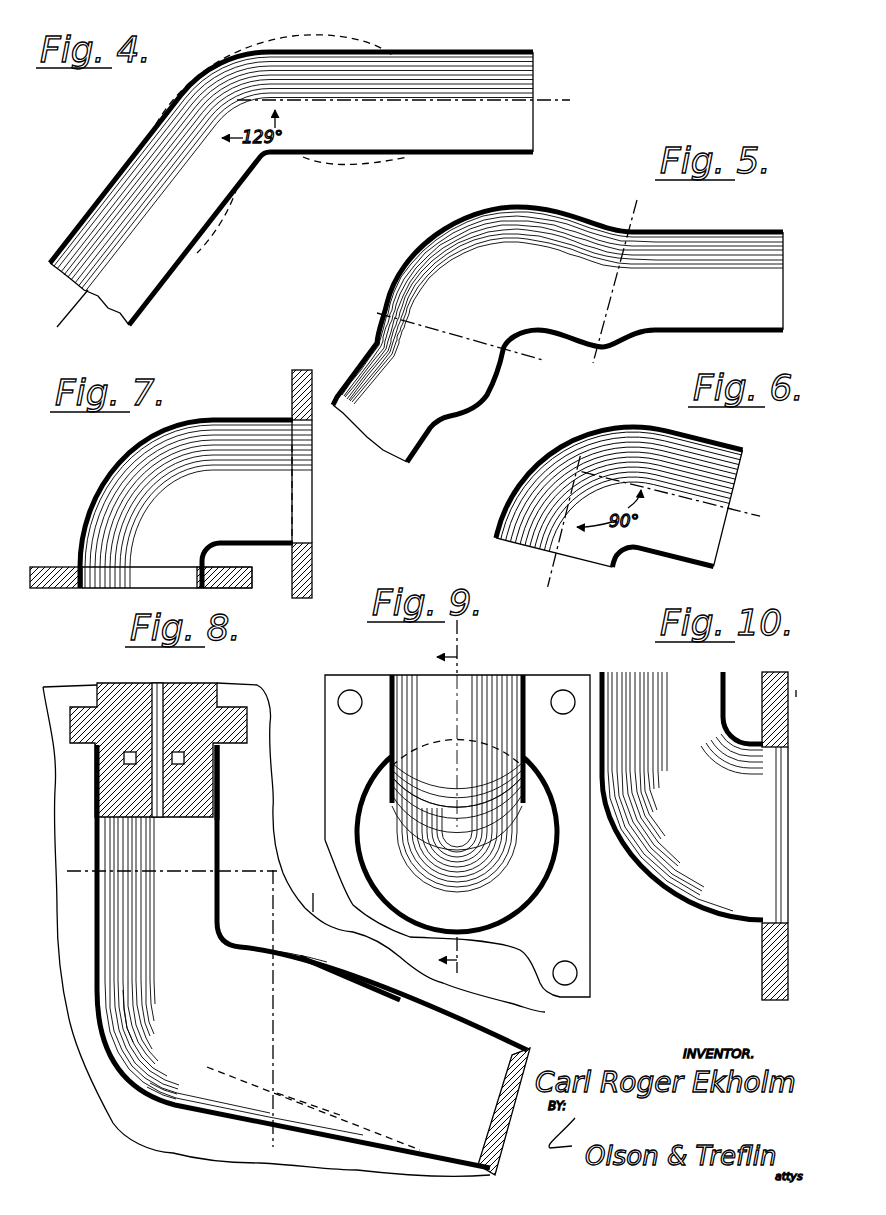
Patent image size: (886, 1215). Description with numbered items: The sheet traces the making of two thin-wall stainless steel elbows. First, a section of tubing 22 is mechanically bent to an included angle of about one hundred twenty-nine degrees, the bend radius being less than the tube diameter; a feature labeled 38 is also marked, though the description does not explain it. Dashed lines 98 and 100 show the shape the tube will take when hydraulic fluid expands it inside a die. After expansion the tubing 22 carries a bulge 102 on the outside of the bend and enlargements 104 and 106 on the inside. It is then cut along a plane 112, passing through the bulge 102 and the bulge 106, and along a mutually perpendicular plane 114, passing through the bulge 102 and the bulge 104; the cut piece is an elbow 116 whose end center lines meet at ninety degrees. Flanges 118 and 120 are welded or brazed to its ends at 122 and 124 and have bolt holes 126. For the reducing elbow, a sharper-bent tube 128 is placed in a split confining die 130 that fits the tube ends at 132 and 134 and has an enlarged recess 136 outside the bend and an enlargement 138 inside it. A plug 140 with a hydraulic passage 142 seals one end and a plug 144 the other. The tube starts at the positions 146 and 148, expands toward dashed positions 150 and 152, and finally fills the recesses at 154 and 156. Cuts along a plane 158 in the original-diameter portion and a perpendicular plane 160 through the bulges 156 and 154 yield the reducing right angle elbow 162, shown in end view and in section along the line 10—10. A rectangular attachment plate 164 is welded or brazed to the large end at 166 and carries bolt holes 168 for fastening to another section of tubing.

In FIG. 4, the tubing 22 is at (478, 52).
In FIG. 5, the tubing 22 is at (733, 230).
In FIG. 4, the bend 38 is at (233, 66).
In FIG. 4, the dashed line 98 is at (295, 35).
In FIG. 4, the dashed line 100 is at (320, 203).
In FIG. 5, the bulge 102 is at (511, 206).
In FIG. 5, the bulge 104 is at (487, 393).
In FIG. 5, the bulge 106 is at (618, 348).
In FIG. 5, the plane 112 is at (610, 300).
In FIG. 5, the plane 114 is at (479, 342).
In FIG. 6, the elbow 116 is at (512, 491).
In FIG. 7, the elbow 116 is at (123, 467).
In FIG. 7, the flange 118 is at (297, 368).
In FIG. 7, the flange 120 is at (253, 578).
In FIG. 7, the weld or braze joint 122 is at (287, 418).
In FIG. 7, the weld or braze joint 124 is at (70, 563).
In FIG. 7, the bolt holes 126 is at (52, 592).
In FIG. 8, the bent section of tubing 128 is at (222, 887).
In FIG. 8, the split confining die 130 is at (127, 1100).
In FIG. 8, the die conforming portion 132 is at (223, 781).
In FIG. 8, the die conforming portion 134 is at (515, 1036).
In FIG. 8, the enlarged recess 136 is at (163, 1102).
In FIG. 8, the recess enlargement 138 is at (315, 893).
In FIG. 8, the plug 140 is at (217, 683).
In FIG. 8, the hydraulic passage 142 is at (160, 737).
In FIG. 8, the plug 144 is at (500, 1133).
In FIG. 8, the initial tube position 146 is at (277, 1093).
In FIG. 8, the initial tube position 148 is at (328, 1000).
In FIG. 8, the dashed line position 150 is at (173, 1063).
In FIG. 8, the dashed line position 152 is at (327, 937).
In FIG. 8, the bulge 154 is at (187, 1112).
In FIG. 8, the bulge 156 is at (367, 968).
In FIG. 8, the plane 158 is at (187, 870).
In FIG. 8, the plane 160 is at (273, 1040).
In FIG. 9, the reducing right angle elbow 162 is at (523, 883).
In FIG. 10, the reducing right angle elbow 162 is at (687, 912).
In FIG. 9, the attachment plate 164 is at (533, 687).
In FIG. 10, the attachment plate 164 is at (757, 725).
In FIG. 9, the weld or braze joint 166 is at (538, 778).
In FIG. 10, the weld or braze joint 166 is at (747, 730).
In FIG. 9, the bolt holes 168 is at (351, 690).
In FIG. 10, the bolt holes 168 is at (796, 690).
In FIG. 9, the line 10— 10 is at (470, 796).